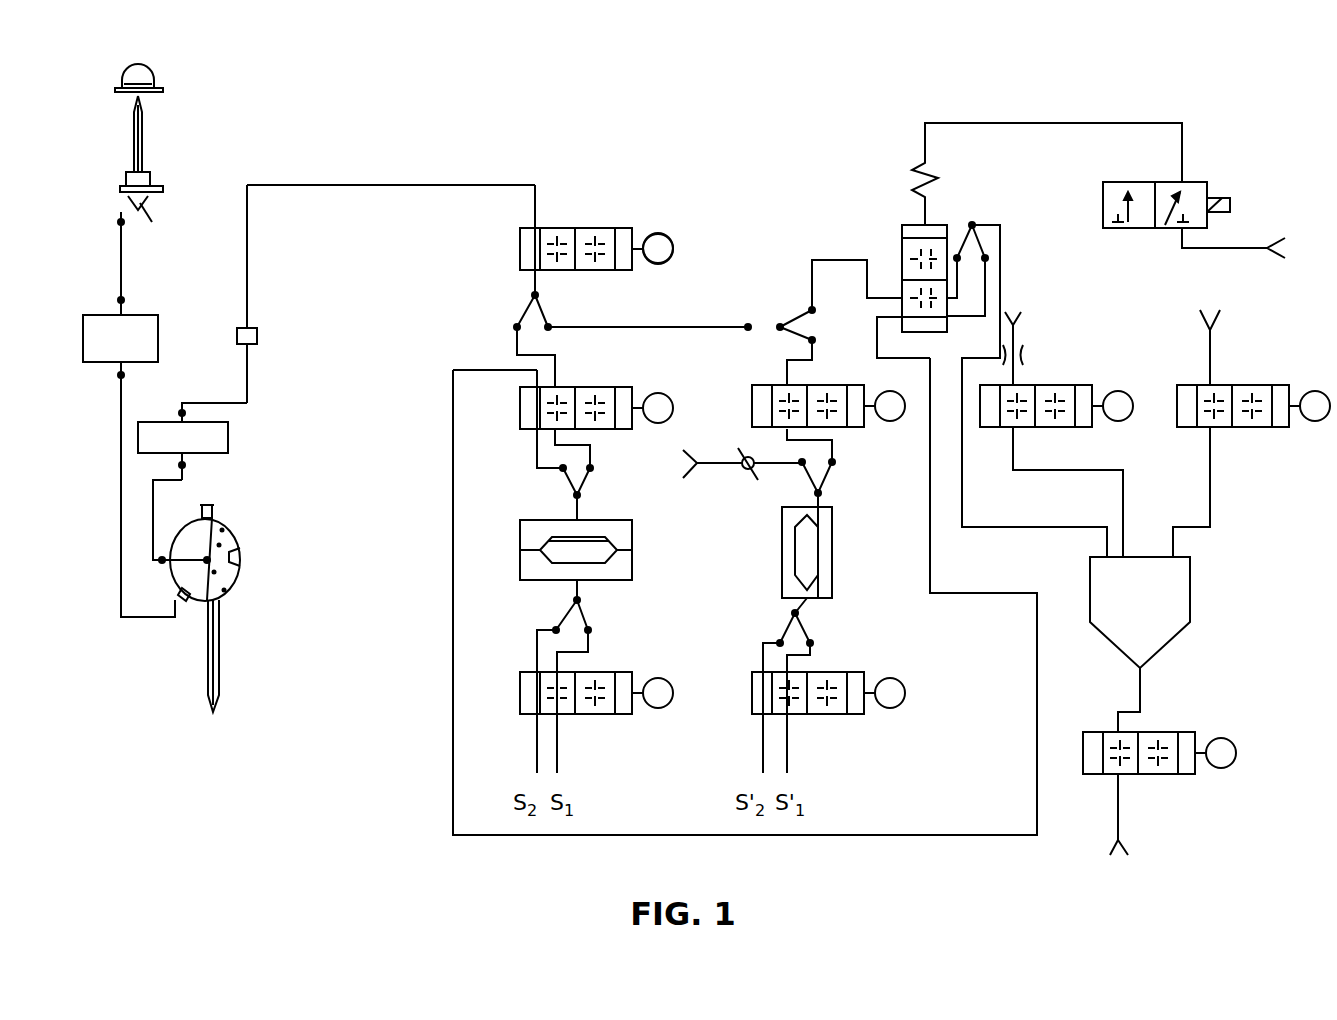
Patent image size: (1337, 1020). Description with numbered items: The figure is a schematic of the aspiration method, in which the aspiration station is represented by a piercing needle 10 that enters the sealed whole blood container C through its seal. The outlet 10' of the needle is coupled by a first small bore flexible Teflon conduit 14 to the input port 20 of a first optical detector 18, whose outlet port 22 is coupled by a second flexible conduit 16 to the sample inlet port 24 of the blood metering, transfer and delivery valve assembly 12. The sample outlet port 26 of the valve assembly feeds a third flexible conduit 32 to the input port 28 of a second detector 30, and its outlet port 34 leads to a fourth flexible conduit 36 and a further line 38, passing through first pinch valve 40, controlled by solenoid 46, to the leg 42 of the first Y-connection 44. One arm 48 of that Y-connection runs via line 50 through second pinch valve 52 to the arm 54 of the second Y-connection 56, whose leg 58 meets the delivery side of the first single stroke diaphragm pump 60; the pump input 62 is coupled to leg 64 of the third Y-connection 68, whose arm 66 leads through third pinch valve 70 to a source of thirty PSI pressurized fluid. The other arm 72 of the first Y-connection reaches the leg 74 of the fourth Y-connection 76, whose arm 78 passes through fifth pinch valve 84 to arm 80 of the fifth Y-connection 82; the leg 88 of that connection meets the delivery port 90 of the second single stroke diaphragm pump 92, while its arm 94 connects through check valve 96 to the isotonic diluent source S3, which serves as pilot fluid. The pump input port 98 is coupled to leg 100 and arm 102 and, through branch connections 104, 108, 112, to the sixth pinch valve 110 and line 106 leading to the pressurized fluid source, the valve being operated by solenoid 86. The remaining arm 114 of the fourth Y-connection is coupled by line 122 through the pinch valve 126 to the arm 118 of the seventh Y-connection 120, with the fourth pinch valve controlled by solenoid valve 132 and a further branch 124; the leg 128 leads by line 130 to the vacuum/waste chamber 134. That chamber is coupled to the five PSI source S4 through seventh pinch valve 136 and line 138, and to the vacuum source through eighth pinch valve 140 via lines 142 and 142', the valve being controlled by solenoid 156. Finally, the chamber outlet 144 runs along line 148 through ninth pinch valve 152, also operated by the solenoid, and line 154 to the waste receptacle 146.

The sealed whole blood container C is at (158, 72).
The piercing needle 10 is at (163, 144).
The outlet of the piercing needle 10' is at (91, 199).
The solenoid 156 is at (150, 200).
The first flexible conduit 14 is at (125, 263).
The input port of the first optical detector 20 is at (125, 302).
The first optical detector 18 is at (160, 334).
The outlet port of the first optical detector 22 is at (125, 375).
The line 38 is at (250, 259).
The fourth flexible conduit 36 is at (250, 376).
The outlet port of the second detector 34 is at (178, 412).
The second detector 30 is at (230, 445).
The second flexible conduit 16 is at (120, 445).
The input port of the second detector 28 is at (186, 463).
The third flexible conduit 32 is at (150, 498).
The blood metering, transfer and delivery valve assembly 12 is at (258, 572).
The sample outlet port of the valve assembly 26 is at (178, 595).
The sample inlet port of the valve assembly 24 is at (190, 615).
The first pinch valve 40 is at (630, 210).
The solenoid 46 is at (673, 248).
The leg of the first Y-connection 42 is at (530, 278).
The first Y-connection 44 is at (555, 305).
The arm of the first Y-connection 48 is at (527, 315).
The line 50 is at (515, 342).
The arm of the first Y-connection 72 is at (550, 330).
The second pinch valve 52 is at (606, 378).
The arm of the second Y-connection 54 is at (592, 492).
The second Y-connection 56 is at (552, 488).
The leg of the second Y-connection 58 is at (565, 508).
The first single stroke diaphragm pump 60 is at (646, 550).
The input of the first pump 62 is at (585, 588).
The leg of the third Y-connection 64 is at (568, 590).
The third Y-connection 68 is at (600, 620).
The arm of the third Y-connection 66 is at (588, 638).
The third pinch valve 70 is at (598, 724).
The leg of the fourth Y-connection 74 is at (766, 324).
The fourth Y-connection 76 is at (782, 300).
The arm of the fourth Y-connection 78 is at (790, 333).
The arm of the fourth Y-connection 114 is at (815, 310).
The line 122 is at (850, 258).
The fifth Y-connection 82 is at (842, 458).
The solenoid 86 is at (885, 391).
The fifth pinch valve 84 is at (735, 388).
The source of isotonic diluent S3 is at (691, 464).
The check valve 96 is at (754, 457).
The arm of the fifth Y-connection 94 is at (802, 482).
The leg of the fifth Y-connection 88 is at (815, 500).
The arm of the fifth Y-connection 80 is at (825, 472).
The delivery port of the second pump 90 is at (820, 500).
The second single stroke diaphragm pump 92 is at (842, 545).
The input port of the second pump 98 is at (795, 600).
The leg 100 is at (790, 617).
The arm 102 is at (797, 630).
The switch 104 is at (826, 640).
The line 106 is at (812, 652).
The line 108 is at (783, 632).
The line 112 is at (770, 660).
The sixth pinch valve 110 is at (832, 725).
The seventh Y-connection 120 is at (1012, 263).
The fourth pinch valve 126 is at (905, 210).
The leg of the seventh Y-connection 128 is at (976, 223).
The switch 124 is at (982, 253).
The arm of the seventh Y-connection 118 is at (957, 253).
The line 130 is at (1002, 283).
The solenoid valve 132 is at (1215, 172).
The source of 5 PSI pressurized fluid S4 is at (1031, 348).
The seventh pinch valve 136 is at (1057, 378).
The line 138 is at (1055, 468).
The eighth pinch valve 140 is at (1227, 340).
The line 142' is at (1263, 355).
The line 142 is at (1243, 492).
The vacuum/waste chamber 134 is at (1192, 587).
The outlet of the vacuum/waste chamber 144 is at (1140, 668).
The line 148 is at (1138, 690).
The ninth pinch valve 152 is at (1158, 790).
The line 154 is at (1118, 808).
The waste receptacle 146 is at (1125, 845).